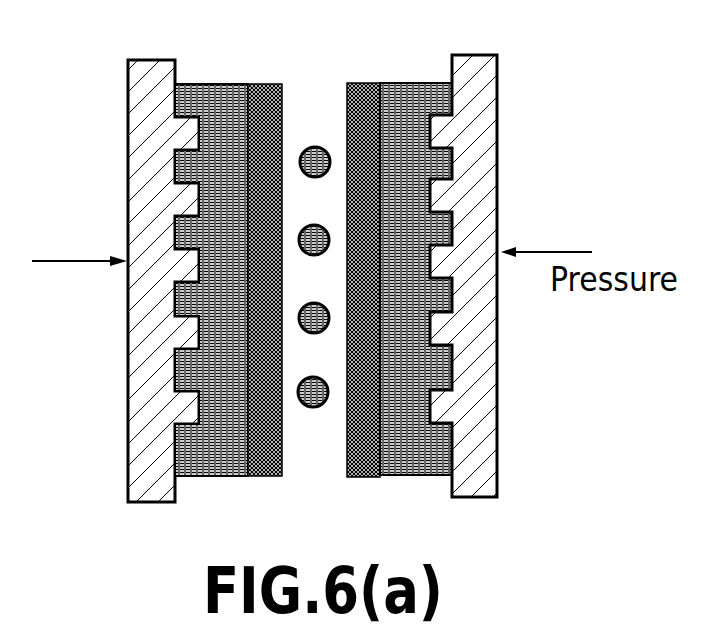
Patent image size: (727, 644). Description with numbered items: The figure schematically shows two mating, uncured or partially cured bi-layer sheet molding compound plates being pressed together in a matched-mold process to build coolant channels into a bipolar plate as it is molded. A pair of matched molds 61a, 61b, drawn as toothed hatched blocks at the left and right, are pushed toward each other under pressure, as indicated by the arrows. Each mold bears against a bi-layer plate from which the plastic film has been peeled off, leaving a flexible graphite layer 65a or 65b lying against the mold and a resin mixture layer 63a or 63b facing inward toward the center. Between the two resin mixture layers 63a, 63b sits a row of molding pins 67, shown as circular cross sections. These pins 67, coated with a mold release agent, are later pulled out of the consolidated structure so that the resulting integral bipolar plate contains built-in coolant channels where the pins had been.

The matched mold 61a is at (490, 386).
The matched mold 61b is at (135, 403).
The resin mixture layer 63a is at (362, 85).
The resin mixture layer 63b is at (262, 85).
The flexible graphite layer 65a is at (405, 470).
The flexible graphite layer 65b is at (200, 462).
The molding pins 67 is at (313, 407).